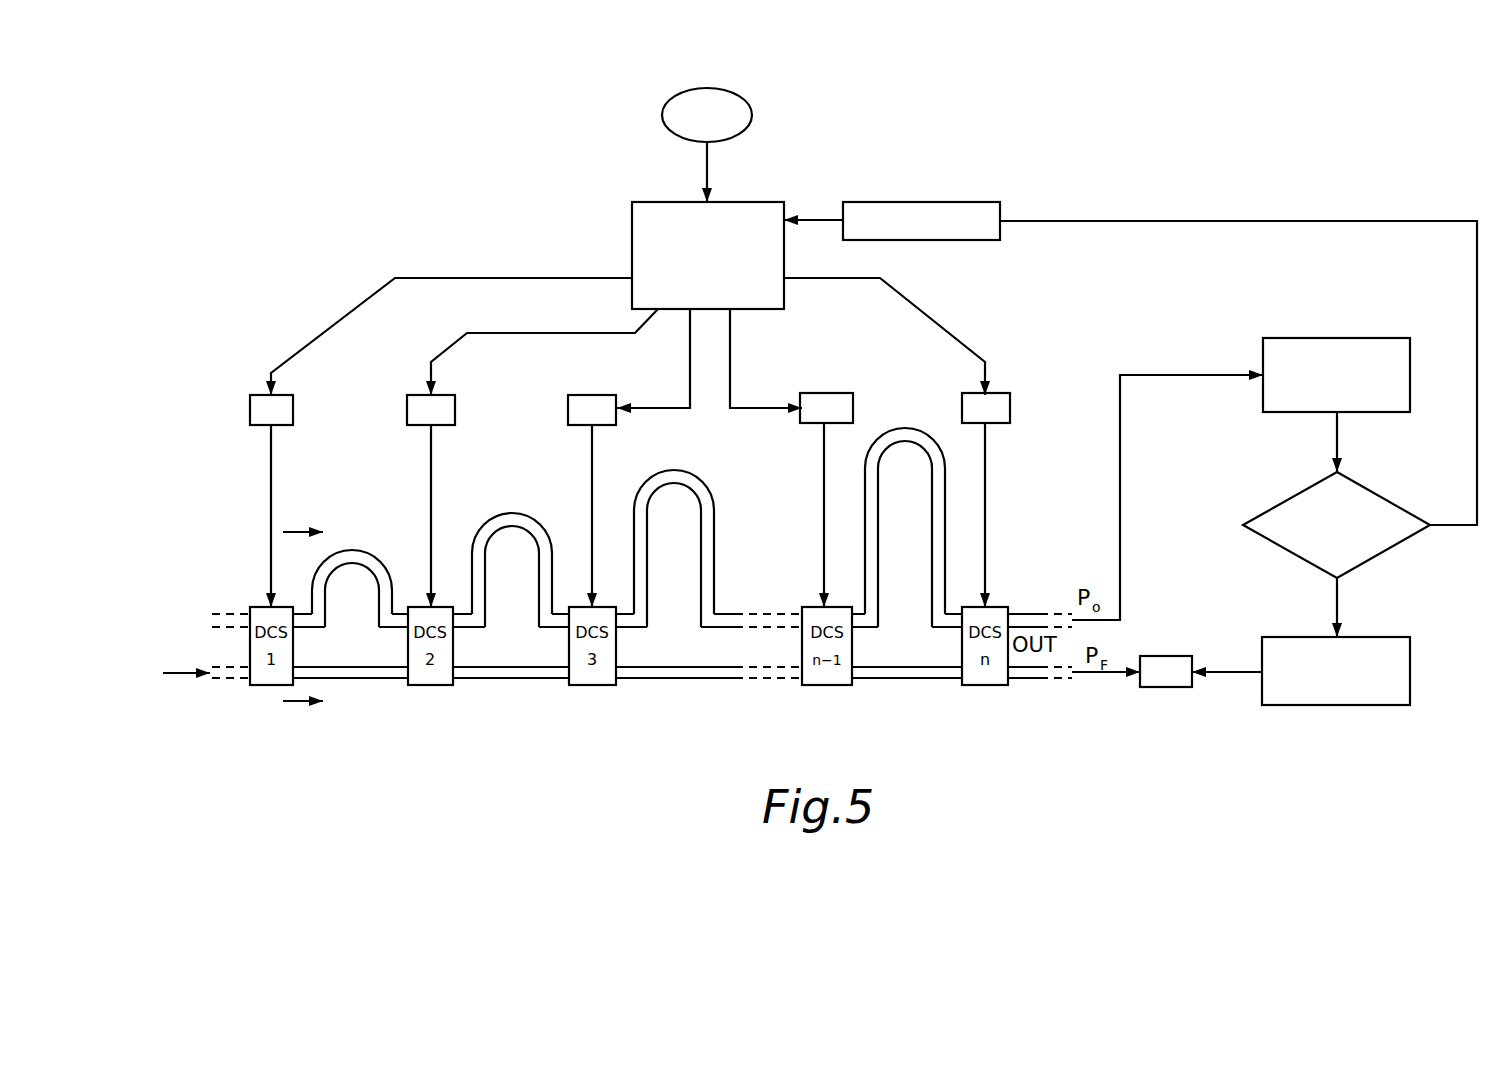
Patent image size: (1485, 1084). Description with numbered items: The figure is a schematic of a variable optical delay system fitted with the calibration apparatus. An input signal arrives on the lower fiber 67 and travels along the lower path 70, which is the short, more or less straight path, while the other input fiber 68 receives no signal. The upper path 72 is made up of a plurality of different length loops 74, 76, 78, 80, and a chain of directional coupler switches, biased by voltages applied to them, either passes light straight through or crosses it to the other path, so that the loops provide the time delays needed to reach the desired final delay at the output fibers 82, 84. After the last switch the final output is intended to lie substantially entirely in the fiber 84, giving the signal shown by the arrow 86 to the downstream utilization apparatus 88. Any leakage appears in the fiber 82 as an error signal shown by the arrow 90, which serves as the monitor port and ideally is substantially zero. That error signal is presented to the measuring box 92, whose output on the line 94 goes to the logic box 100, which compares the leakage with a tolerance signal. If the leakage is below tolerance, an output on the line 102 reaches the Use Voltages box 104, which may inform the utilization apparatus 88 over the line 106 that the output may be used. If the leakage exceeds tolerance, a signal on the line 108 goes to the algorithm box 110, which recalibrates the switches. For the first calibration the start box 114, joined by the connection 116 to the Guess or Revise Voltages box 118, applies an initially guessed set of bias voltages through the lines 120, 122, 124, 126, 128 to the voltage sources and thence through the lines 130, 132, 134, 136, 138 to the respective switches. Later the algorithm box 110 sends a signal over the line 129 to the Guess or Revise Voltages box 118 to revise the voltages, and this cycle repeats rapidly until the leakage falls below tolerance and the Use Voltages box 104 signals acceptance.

The lower fiber 67 is at (237, 680).
The other input fiber 68 is at (238, 613).
The lower path 70 is at (294, 703).
The upper path 72 is at (286, 531).
The loop 74 is at (339, 600).
The loop 76 is at (499, 565).
The loop 78 is at (661, 520).
The loop 80 is at (892, 480).
The output fiber 82 is at (1028, 610).
The output fiber 84 is at (1023, 686).
The output signal arrow 86 is at (1100, 675).
The utilization apparatus 88 is at (1167, 656).
The error signal arrow 90 is at (1178, 375).
The measuring box 92 is at (1410, 371).
The measurement output line 94 is at (1337, 428).
The logic box 100 is at (1375, 495).
The yes output line 102 is at (1338, 593).
The Use Voltages box 104 is at (1270, 637).
The connection line 106 is at (1236, 674).
The recalibration line 108 is at (1280, 220).
The algorithm box 110 is at (938, 202).
The start box 114 is at (752, 117).
The start flow line 116 is at (707, 162).
The Guess or Revise Voltages box 118 is at (632, 237).
The voltage line 120 is at (338, 320).
The voltage line 122 is at (457, 338).
The voltage line 124 is at (658, 408).
The voltage line 126 is at (730, 362).
The voltage line 128 is at (934, 318).
The algorithm feedback line 129 is at (822, 220).
The bias line 130 is at (271, 479).
The bias line 132 is at (430, 488).
The bias line 134 is at (592, 479).
The bias line 136 is at (824, 478).
The bias line 138 is at (985, 470).